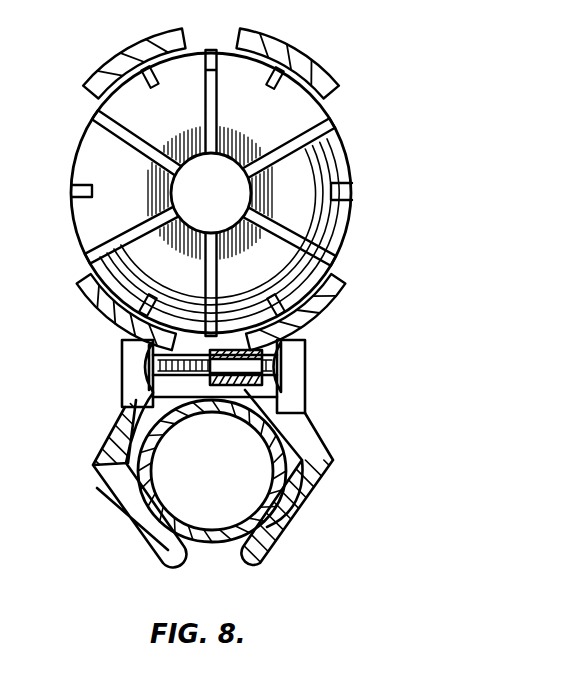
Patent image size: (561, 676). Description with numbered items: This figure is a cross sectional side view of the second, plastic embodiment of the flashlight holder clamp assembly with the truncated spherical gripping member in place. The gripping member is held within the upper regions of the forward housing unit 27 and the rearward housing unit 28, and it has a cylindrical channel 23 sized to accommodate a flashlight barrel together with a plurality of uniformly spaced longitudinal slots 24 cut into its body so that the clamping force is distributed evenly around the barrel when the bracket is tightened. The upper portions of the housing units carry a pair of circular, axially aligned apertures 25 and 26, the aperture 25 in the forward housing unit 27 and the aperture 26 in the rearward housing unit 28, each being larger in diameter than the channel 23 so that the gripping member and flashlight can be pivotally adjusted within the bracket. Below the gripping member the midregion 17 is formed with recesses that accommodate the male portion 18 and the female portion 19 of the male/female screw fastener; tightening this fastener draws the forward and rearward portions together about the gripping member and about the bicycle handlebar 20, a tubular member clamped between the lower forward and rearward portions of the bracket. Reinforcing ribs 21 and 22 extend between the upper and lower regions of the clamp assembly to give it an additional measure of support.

The mid-region 17 is at (112, 347).
The male portion 18 is at (140, 371).
The female portion 19 is at (283, 383).
The bicycle handlebar 20 is at (210, 545).
The reinforcing rib 21 is at (128, 398).
The reinforcing rib 22 is at (328, 357).
The channel 23 is at (224, 185).
The longitudinal slots 24 is at (353, 190).
The aperture 25 is at (72, 132).
The aperture 26 is at (362, 222).
The forward housing unit 27 is at (106, 70).
The rearward housing unit 28 is at (300, 56).